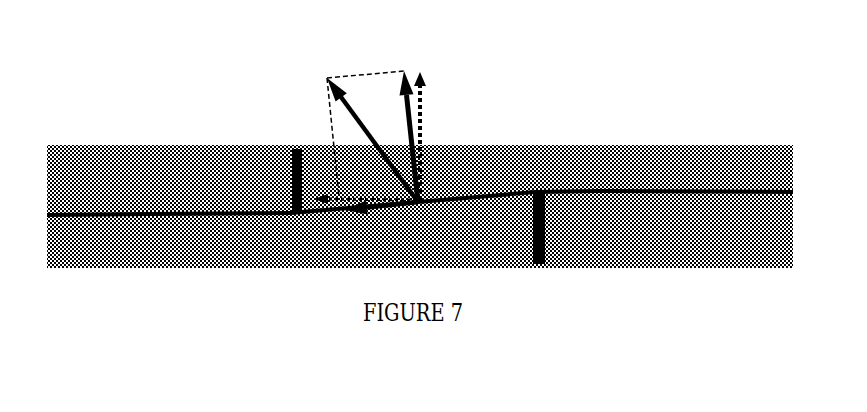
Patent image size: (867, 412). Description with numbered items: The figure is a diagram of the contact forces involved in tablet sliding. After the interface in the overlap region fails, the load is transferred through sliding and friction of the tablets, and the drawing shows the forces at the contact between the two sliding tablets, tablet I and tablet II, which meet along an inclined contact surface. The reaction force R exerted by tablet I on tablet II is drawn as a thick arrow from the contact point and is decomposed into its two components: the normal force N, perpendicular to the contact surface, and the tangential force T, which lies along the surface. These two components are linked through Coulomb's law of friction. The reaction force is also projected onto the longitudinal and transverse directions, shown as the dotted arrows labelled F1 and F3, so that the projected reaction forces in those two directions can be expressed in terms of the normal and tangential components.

The reaction force R is at (361, 128).
The normal force N is at (401, 125).
The vertical force component F3 is at (433, 136).
The horizontal force component F1 is at (363, 189).
The tangential force T is at (381, 215).
The tablet I is at (176, 236).
The tablet II is at (635, 178).